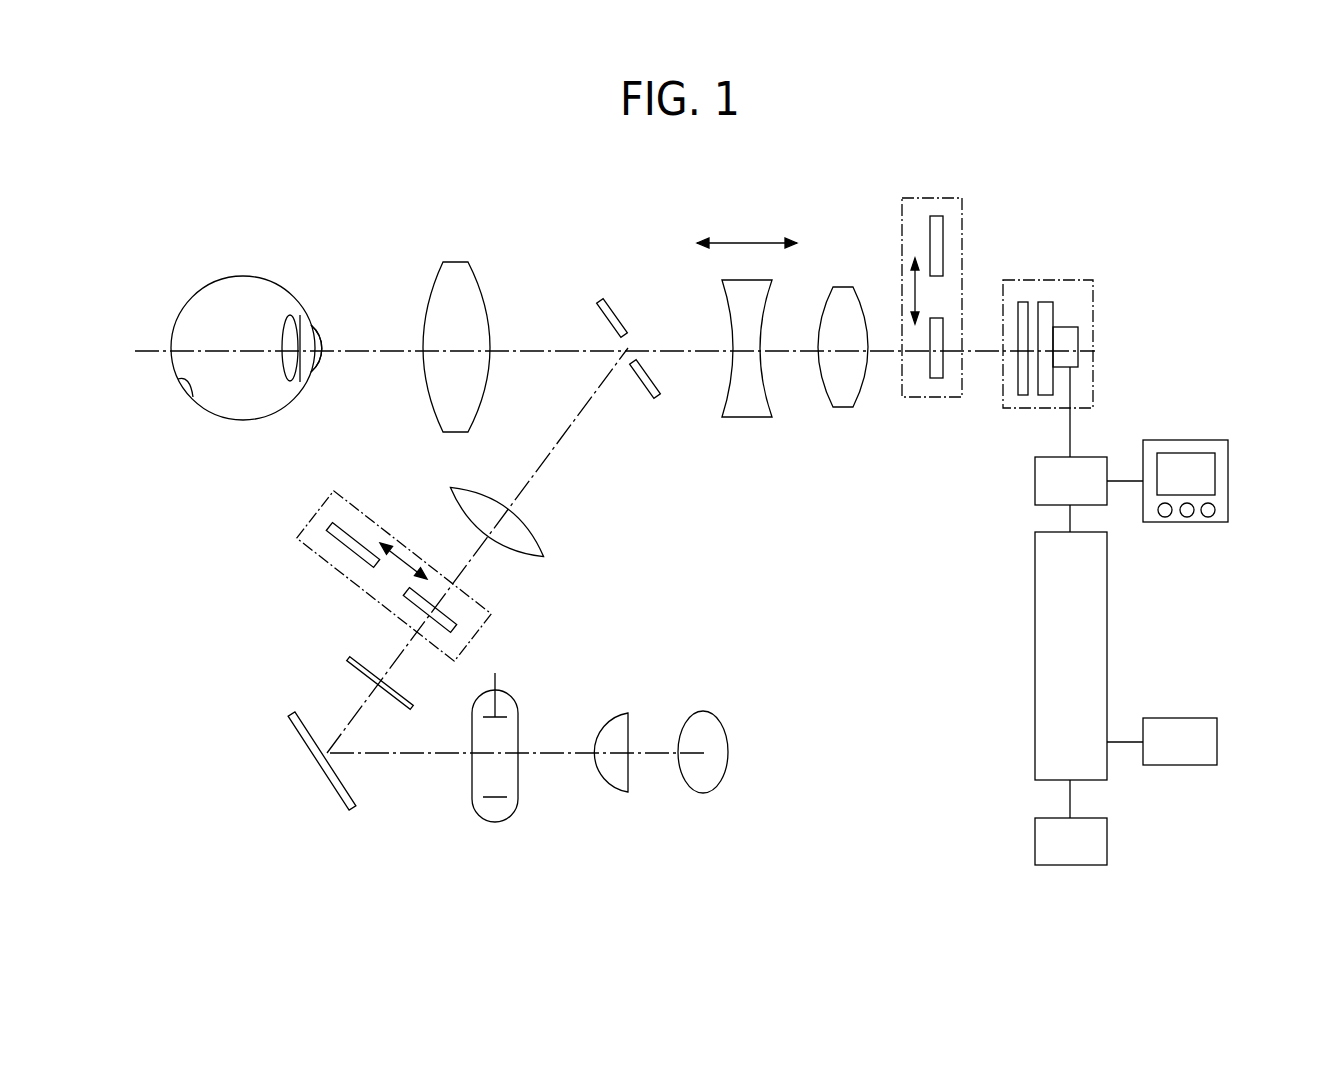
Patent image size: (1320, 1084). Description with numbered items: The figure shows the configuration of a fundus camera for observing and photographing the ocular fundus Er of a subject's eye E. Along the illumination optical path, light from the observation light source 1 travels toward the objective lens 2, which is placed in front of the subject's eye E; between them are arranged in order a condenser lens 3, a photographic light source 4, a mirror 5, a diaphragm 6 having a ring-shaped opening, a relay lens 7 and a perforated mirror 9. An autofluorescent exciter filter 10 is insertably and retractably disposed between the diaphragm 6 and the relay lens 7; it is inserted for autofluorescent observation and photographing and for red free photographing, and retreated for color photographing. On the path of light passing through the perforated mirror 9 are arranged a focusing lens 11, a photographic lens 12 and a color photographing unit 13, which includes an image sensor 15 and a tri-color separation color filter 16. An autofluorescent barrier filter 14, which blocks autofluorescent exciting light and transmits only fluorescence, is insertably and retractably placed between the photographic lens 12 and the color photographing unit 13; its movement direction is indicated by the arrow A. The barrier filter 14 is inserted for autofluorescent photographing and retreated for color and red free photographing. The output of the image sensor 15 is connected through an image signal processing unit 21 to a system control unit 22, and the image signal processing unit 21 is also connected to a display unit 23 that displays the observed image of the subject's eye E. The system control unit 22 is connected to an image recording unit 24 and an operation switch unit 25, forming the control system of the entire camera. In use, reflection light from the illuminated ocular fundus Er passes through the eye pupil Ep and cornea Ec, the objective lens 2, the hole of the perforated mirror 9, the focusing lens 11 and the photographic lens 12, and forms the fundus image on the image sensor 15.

The subject's eye E is at (243, 278).
The eye pupil Ep is at (315, 327).
The cornea Ec is at (313, 373).
The ocular fundus Er is at (190, 400).
The observation light source 1 is at (703, 784).
The objective lens 2 is at (456, 262).
The condenser lens 3 is at (613, 774).
The photographic light source 4 is at (493, 797).
The mirror 5 is at (291, 713).
The diaphragm 6 is at (352, 662).
The relay lens 7 is at (527, 547).
The perforated mirror 9 is at (603, 297).
The autofluorescent exciter filter 10 is at (477, 623).
The focusing lens 11 is at (733, 317).
The photographic lens 12 is at (842, 283).
The color photographing unit 13 is at (1058, 278).
The autofluorescent barrier filter 14 is at (940, 202).
The image sensor 15 is at (1077, 332).
The tri-color separation color filter 16 is at (1022, 380).
The image signal processing unit 21 is at (1097, 465).
The system control unit 22 is at (1103, 647).
The display unit 23 is at (1207, 448).
The image recording unit 24 is at (1200, 727).
The operation switch unit 25 is at (1072, 853).
The movement direction A is at (747, 228).